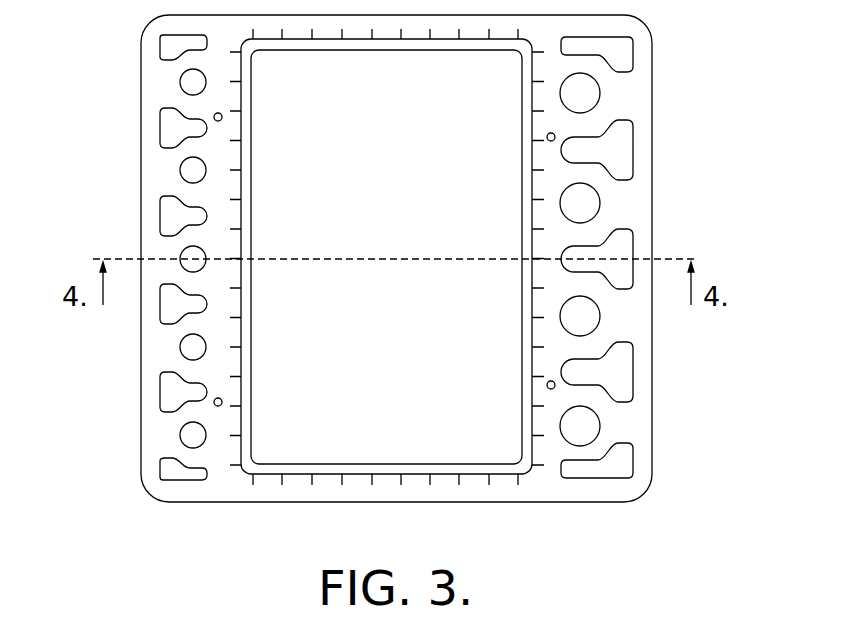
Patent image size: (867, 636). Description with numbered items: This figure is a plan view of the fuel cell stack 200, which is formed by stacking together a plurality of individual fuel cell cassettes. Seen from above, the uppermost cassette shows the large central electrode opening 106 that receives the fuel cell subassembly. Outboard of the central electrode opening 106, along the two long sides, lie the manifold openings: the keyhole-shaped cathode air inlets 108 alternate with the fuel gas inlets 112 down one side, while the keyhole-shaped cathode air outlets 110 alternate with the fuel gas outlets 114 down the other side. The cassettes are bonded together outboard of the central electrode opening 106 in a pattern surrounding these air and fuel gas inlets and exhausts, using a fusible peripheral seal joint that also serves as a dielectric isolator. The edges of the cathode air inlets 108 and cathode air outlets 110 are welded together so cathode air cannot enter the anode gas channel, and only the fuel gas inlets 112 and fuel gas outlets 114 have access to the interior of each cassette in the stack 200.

The fuel cell stack 200 is at (790, 59).
The central electrode opening 106 is at (488, 473).
The cathode air inlets 108 is at (170, 47).
The cathode air outlets 110 is at (614, 48).
The fuel gas inlets 112 is at (190, 82).
The fuel gas outlets 114 is at (590, 93).